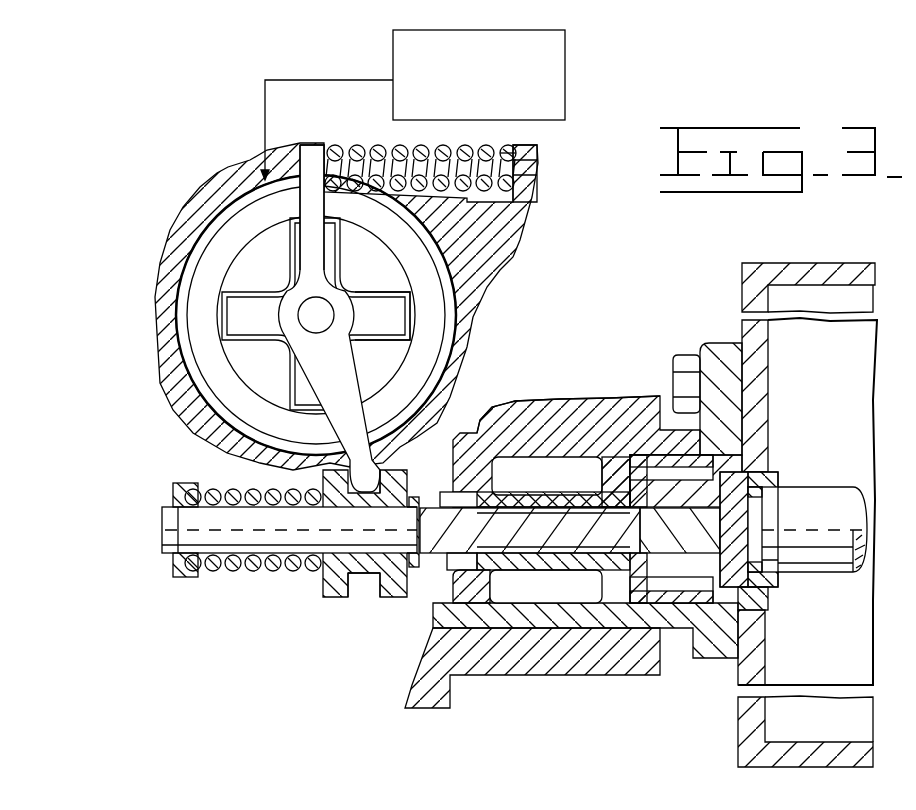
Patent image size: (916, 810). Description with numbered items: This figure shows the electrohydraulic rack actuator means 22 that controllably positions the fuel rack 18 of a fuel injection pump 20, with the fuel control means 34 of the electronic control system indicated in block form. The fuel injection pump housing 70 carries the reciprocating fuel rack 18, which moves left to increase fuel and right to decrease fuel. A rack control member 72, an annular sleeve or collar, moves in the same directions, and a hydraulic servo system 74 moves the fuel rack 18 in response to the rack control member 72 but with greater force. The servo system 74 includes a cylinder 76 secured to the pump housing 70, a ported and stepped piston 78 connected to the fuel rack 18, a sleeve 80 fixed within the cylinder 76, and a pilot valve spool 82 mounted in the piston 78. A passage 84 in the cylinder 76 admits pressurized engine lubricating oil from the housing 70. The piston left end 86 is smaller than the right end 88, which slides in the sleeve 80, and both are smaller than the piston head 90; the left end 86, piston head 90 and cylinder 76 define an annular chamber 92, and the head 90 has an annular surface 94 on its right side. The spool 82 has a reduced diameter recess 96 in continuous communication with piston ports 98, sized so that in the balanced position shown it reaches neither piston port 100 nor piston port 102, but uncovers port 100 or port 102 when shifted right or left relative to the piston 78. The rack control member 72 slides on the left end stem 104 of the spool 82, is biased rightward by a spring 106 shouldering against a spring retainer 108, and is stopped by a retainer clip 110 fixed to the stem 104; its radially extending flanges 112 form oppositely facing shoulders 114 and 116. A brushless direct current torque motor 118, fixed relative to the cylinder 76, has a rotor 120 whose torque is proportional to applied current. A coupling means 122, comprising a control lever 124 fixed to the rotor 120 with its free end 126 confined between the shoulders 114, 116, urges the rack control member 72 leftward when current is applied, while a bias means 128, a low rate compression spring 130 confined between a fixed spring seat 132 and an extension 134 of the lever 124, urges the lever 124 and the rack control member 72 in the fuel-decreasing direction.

The fuel rack 18 is at (832, 544).
The fuel injection pump 20 is at (774, 245).
The electrohydraulic rack actuator means 22 is at (172, 100).
The fuel control means 34 is at (493, 86).
The fuel injection pump housing 70 is at (748, 730).
The rack control member 72 is at (314, 587).
The hydraulic servo system 74 is at (281, 560).
The cylinder 76 is at (510, 440).
The piston 78 is at (558, 460).
The sleeve 80 is at (775, 596).
The pilot valve spool 82 is at (456, 542).
The passage 84 is at (766, 642).
The left end of piston 86 is at (528, 470).
The right end of piston 88 is at (778, 470).
The piston head 90 is at (600, 477).
The annular chamber 92 is at (549, 482).
The annular surface 94 is at (645, 460).
The reduced diameter recess 96 is at (530, 577).
The piston ports 98 is at (585, 573).
The piston port 100 is at (656, 536).
The piston port 102 is at (453, 605).
The left end stem 104 is at (275, 544).
The spring 106 is at (210, 574).
The spring retainer 108 is at (176, 483).
The retainer clip 110 is at (417, 493).
The radially extending flanges 112 is at (372, 604).
The shoulder 114 is at (409, 528).
The shoulder 116 is at (372, 507).
The brushless direct current torque motor 118 is at (166, 324).
The rotor 120 is at (262, 326).
The coupling means 122 is at (394, 312).
The control lever 124 is at (340, 367).
The free end of control lever 126 is at (348, 446).
The bias means 128 is at (398, 140).
The low rate compression spring 130 is at (492, 146).
The fixed spring seat 132 is at (532, 170).
The extension of control lever 134 is at (312, 158).